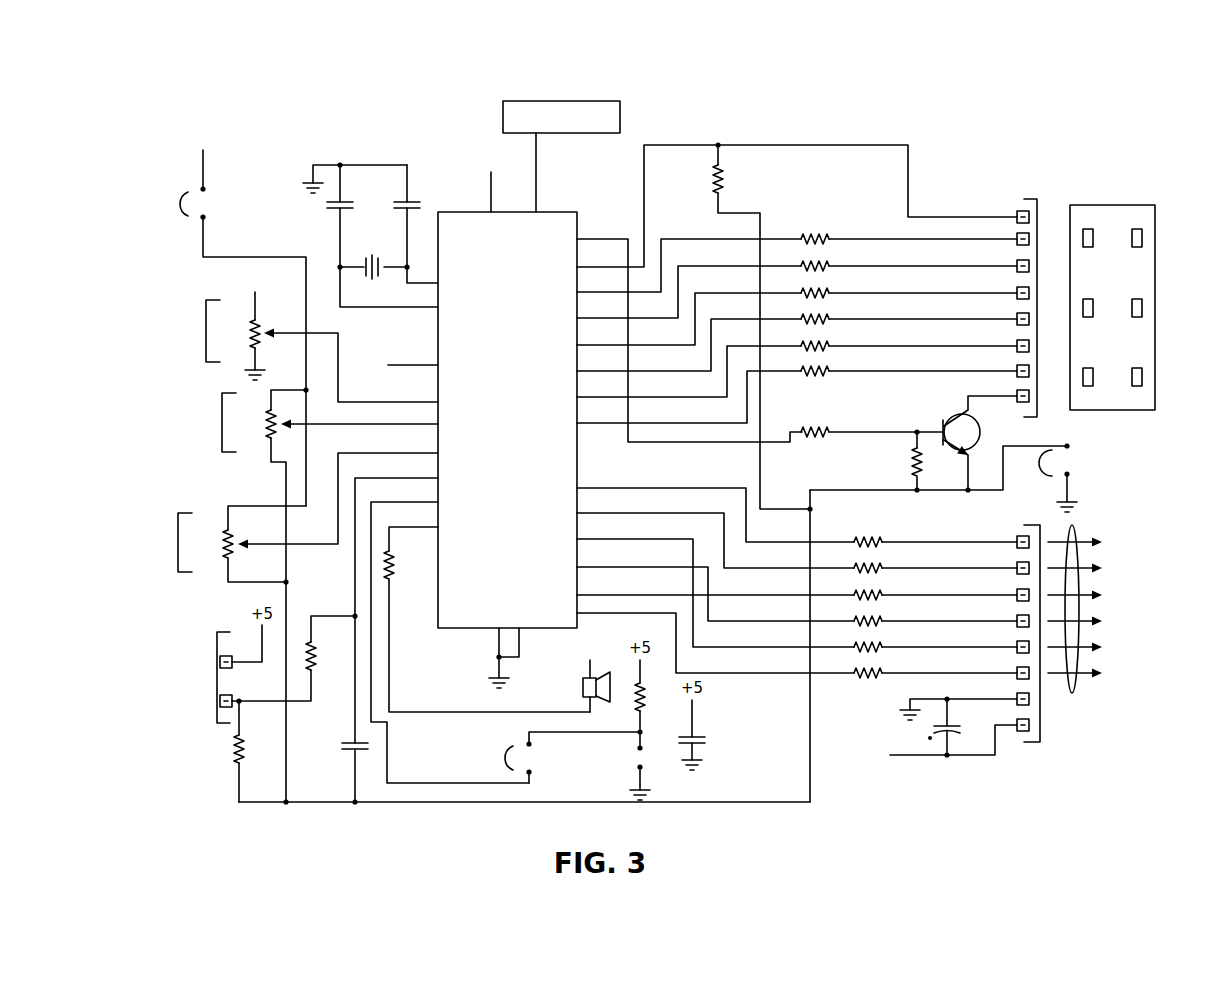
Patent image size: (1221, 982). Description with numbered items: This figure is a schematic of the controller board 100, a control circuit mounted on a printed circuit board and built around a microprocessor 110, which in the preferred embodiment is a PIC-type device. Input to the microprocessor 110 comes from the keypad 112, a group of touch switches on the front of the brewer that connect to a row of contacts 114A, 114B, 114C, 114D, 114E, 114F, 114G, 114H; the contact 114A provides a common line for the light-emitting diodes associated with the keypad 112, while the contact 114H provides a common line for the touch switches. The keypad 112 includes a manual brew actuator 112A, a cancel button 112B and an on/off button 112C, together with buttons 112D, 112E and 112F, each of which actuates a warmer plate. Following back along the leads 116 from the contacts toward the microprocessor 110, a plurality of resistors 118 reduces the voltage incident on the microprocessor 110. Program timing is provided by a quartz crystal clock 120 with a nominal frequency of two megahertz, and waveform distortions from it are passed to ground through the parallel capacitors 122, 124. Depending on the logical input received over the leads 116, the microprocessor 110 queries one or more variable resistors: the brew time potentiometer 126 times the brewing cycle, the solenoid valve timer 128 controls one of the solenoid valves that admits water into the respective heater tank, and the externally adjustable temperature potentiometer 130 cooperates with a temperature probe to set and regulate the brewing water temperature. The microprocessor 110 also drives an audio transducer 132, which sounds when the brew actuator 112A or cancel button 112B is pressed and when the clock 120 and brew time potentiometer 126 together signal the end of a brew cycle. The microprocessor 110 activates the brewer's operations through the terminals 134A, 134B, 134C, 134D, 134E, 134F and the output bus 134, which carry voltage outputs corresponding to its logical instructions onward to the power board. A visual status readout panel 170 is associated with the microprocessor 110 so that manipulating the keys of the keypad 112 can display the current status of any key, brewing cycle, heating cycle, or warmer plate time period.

The controller board 100 is at (261, 130).
The microprocessor 110 is at (492, 405).
The keypad 112 is at (1088, 212).
The manual brew actuator 112A is at (1093, 229).
The cancel button 112B is at (1093, 299).
The on/off button 112C is at (1093, 368).
The warmer plate button 112D is at (1142, 235).
The warmer plate button 112E is at (1142, 305).
The warmer plate button 112F is at (1142, 373).
The contact 114A is at (1015, 391).
The contact 114B is at (1015, 366).
The contact 114C is at (1015, 341).
The contact 114D is at (1015, 314).
The contact 114E is at (1015, 288).
The contact 114F is at (1015, 261).
The contact 114G is at (1015, 234).
The contact 114H is at (1014, 211).
The leads 116 is at (915, 350).
The resistors 118 is at (813, 233).
The quartz crystal clock 120 is at (368, 262).
The capacitor 122 is at (340, 163).
The capacitor 124 is at (410, 198).
The brew time potentiometer 126 is at (322, 336).
The solenoid valve timer 128 is at (330, 594).
The temperature potentiometer 130 is at (308, 517).
The audio transducer 132 is at (582, 688).
The output bus 134 is at (1078, 700).
The terminal 134A is at (1015, 537).
The terminal 134B is at (1015, 563).
The terminal 134C is at (1015, 590).
The terminal 134D is at (1015, 616).
The terminal 134E is at (1015, 642).
The terminal 134F is at (1015, 668).
The visual status readout panel 170 is at (597, 110).